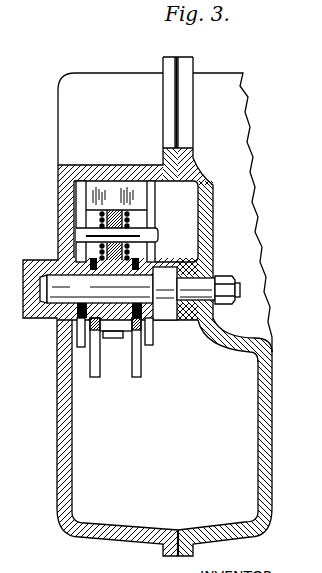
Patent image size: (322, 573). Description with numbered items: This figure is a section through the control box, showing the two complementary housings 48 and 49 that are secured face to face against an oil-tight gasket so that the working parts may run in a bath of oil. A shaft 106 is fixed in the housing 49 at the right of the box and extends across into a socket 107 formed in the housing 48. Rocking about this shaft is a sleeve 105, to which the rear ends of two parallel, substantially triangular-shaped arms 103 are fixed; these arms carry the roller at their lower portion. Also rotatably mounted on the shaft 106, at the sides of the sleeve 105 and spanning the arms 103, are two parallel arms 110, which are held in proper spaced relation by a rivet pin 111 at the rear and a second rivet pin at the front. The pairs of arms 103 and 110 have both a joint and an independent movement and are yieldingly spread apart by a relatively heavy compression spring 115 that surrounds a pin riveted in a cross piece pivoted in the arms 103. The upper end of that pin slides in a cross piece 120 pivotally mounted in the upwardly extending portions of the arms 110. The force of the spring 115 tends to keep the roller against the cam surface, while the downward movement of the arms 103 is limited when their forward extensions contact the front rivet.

The housing 48 is at (58, 210).
The housing 49 is at (270, 399).
The arms 103 is at (135, 378).
The sleeve 105 is at (130, 252).
The shaft 106 is at (150, 300).
The socket 107 is at (37, 319).
The arms 110 is at (77, 340).
The rivet pin 111 is at (92, 236).
The compression spring 115 is at (127, 220).
The cross piece 120 is at (76, 182).